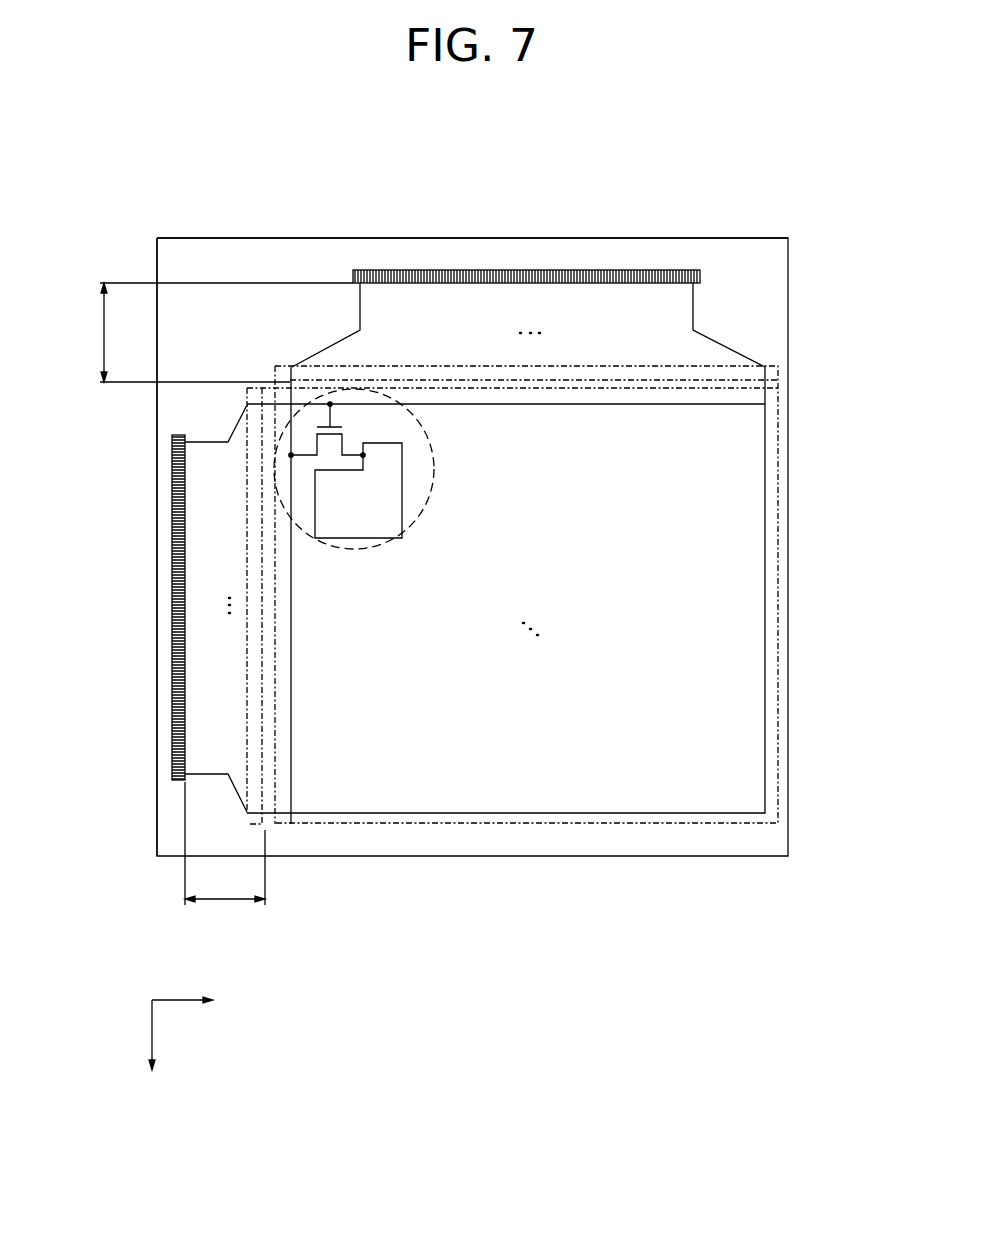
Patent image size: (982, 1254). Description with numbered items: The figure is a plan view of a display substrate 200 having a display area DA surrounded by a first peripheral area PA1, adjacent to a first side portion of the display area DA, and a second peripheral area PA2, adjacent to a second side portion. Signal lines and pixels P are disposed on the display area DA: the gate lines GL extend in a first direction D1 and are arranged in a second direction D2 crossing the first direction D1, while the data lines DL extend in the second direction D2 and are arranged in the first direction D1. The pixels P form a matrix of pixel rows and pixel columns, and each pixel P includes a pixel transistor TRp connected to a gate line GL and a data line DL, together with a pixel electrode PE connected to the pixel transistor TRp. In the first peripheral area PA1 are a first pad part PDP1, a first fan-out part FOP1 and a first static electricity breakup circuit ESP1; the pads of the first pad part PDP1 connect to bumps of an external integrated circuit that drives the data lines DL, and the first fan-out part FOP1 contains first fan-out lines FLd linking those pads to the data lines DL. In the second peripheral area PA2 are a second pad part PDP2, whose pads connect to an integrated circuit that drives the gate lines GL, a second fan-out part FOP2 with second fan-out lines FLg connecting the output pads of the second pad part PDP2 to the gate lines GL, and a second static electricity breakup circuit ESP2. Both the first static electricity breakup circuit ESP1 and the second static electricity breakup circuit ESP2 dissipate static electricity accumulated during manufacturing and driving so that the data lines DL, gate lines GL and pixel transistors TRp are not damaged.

The display substrate 200 is at (628, 193).
The first peripheral area PA1 is at (770, 295).
The second peripheral area PA2 is at (163, 627).
The first pad part PDP1 is at (452, 268).
The second pad part PDP2 is at (172, 513).
The first fan-out lines FLd is at (335, 343).
The second fan-out lines FLg is at (212, 440).
The first fan-out part FOP1 is at (200, 332).
The second fan-out part FOP2 is at (225, 858).
The first static electricity breakup circuit ESP1 is at (778, 368).
The second static electricity breakup circuit ESP2 is at (250, 825).
The gate line GL is at (626, 405).
The data line DL is at (291, 683).
The display area DA is at (778, 540).
The pixel P is at (355, 550).
The pixel transistor TRp is at (337, 429).
The pixel electrode PE is at (402, 485).
The first direction D1 is at (201, 1002).
The second direction D2 is at (151, 1051).